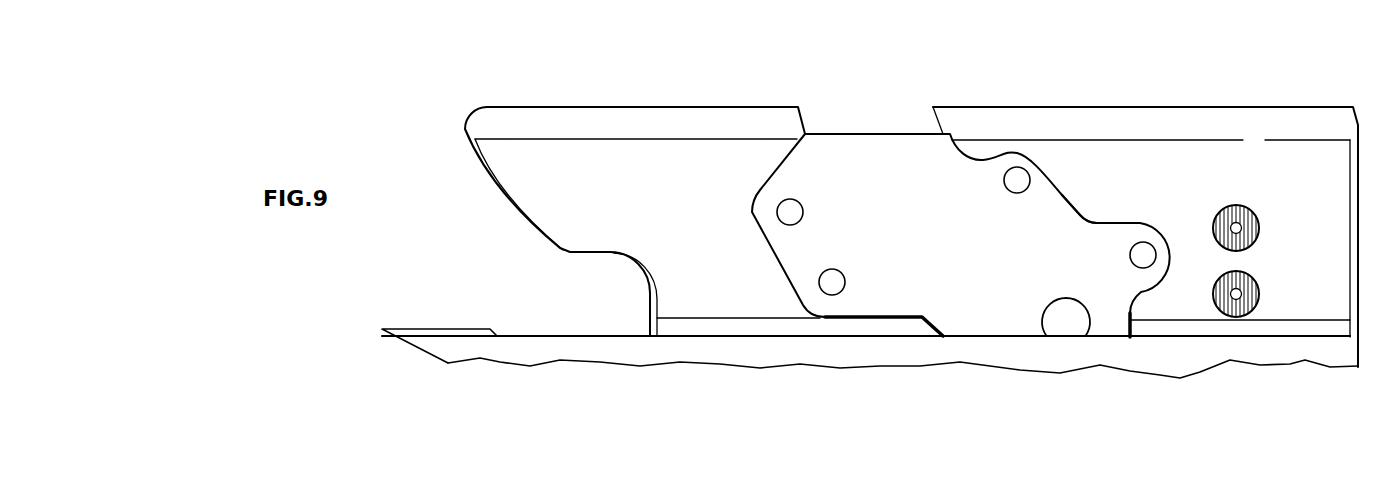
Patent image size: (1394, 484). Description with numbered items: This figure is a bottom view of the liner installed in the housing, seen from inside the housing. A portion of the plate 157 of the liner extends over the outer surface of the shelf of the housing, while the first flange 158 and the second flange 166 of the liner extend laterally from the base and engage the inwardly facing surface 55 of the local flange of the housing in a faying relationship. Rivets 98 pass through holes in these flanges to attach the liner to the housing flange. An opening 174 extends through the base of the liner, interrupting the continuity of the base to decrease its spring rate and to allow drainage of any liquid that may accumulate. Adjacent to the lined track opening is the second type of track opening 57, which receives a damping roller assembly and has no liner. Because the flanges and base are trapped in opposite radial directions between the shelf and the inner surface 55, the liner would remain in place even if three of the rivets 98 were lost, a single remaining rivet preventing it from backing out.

The inwardly facing surface 55 is at (632, 195).
The second type of track opening 57 is at (531, 302).
The plate 157 is at (876, 126).
The first flange 158 is at (773, 235).
The rivets 98 is at (822, 280).
The second flange 166 is at (1087, 227).
The opening 174 is at (1052, 310).